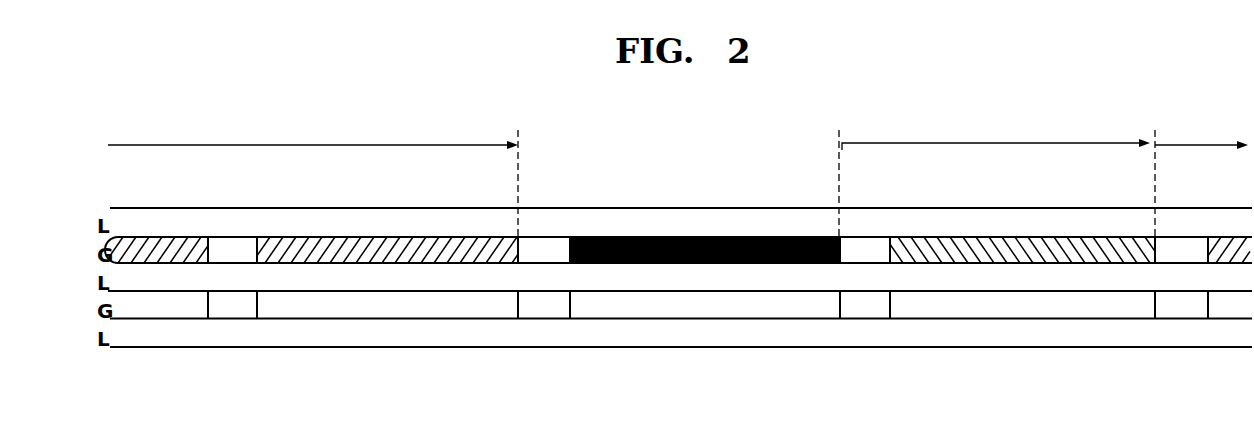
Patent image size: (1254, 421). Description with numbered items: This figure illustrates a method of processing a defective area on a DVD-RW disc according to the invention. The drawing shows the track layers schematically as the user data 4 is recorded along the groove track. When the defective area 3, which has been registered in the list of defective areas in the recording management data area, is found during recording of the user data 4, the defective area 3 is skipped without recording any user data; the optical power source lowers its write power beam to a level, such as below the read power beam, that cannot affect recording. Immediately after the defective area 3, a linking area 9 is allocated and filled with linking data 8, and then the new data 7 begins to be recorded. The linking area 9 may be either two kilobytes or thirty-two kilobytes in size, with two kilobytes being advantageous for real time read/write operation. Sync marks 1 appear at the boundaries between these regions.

The sync mark 1 is at (253, 237).
The defective area 3 is at (683, 237).
The user data 4 is at (257, 143).
The new data 7 is at (1207, 145).
The linking data 8 is at (975, 240).
The linking area 9 is at (941, 143).